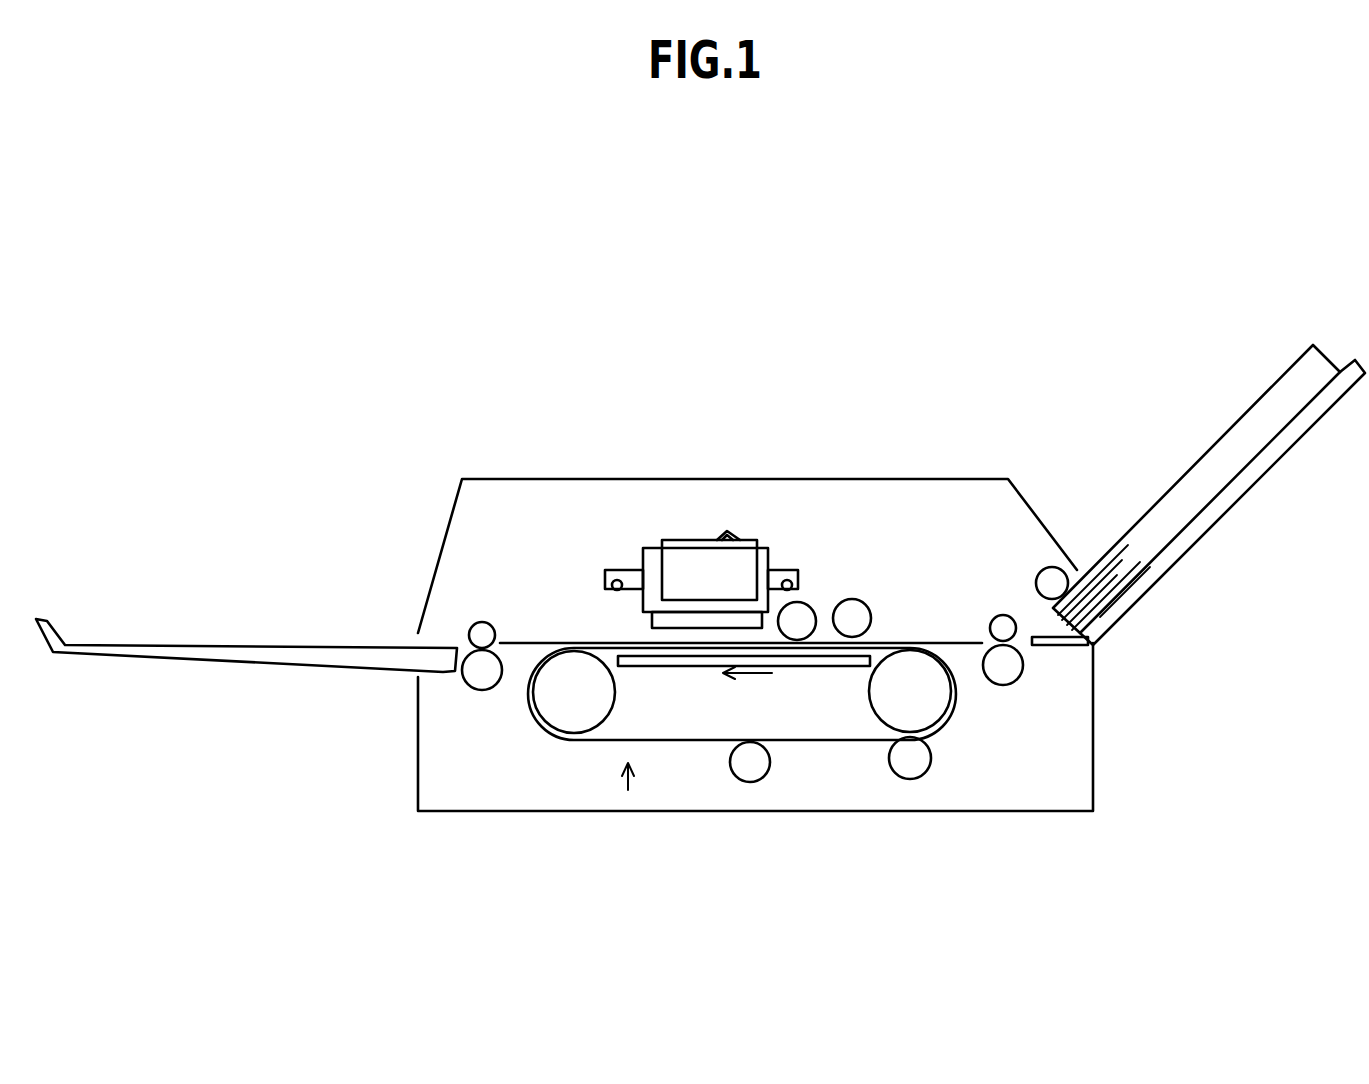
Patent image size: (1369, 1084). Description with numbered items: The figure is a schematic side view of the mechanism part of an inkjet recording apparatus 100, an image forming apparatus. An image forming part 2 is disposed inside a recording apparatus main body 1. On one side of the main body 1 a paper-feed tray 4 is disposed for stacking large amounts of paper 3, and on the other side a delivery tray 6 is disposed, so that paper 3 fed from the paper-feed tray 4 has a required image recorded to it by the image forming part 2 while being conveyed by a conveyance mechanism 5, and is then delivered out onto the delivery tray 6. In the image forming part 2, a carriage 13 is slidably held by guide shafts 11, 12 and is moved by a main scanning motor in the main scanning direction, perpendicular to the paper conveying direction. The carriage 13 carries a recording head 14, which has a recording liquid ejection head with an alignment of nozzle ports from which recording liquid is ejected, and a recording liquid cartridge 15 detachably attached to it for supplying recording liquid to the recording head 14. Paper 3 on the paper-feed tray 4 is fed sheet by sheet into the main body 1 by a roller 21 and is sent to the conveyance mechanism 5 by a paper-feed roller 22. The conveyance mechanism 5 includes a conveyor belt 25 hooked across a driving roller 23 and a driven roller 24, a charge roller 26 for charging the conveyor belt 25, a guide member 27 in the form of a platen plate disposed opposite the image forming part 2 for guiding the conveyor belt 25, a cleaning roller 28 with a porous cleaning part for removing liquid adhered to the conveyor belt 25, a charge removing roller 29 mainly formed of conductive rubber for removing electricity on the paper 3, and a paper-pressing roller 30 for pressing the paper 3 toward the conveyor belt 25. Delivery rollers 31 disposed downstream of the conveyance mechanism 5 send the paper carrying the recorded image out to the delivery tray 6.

The inkjet recording apparatus 100 is at (566, 228).
The recording apparatus main body 1 is at (1093, 768).
The image forming part 2 is at (826, 543).
The paper 3 is at (1238, 432).
The paper-feed tray 4 is at (1248, 475).
The conveyance mechanism 5 is at (628, 790).
The delivery tray 6 is at (257, 655).
The guide shaft 11 is at (786, 583).
The guide shaft 12 is at (618, 583).
The carriage 13 is at (653, 560).
The recording head 14 is at (705, 620).
The recording liquid cartridge 15 is at (697, 550).
The roller 21 is at (1052, 583).
The paper-feed roller 22 is at (1010, 672).
The driving roller 23 is at (930, 697).
The driven roller 24 is at (575, 718).
The conveyor belt 25 is at (790, 637).
The charge roller 26 is at (912, 763).
The guide member 27 is at (702, 655).
The cleaning roller 28 is at (752, 768).
The charge removing roller 29 is at (857, 615).
The paper-pressing roller 30 is at (800, 615).
The delivery rollers 31 is at (470, 680).